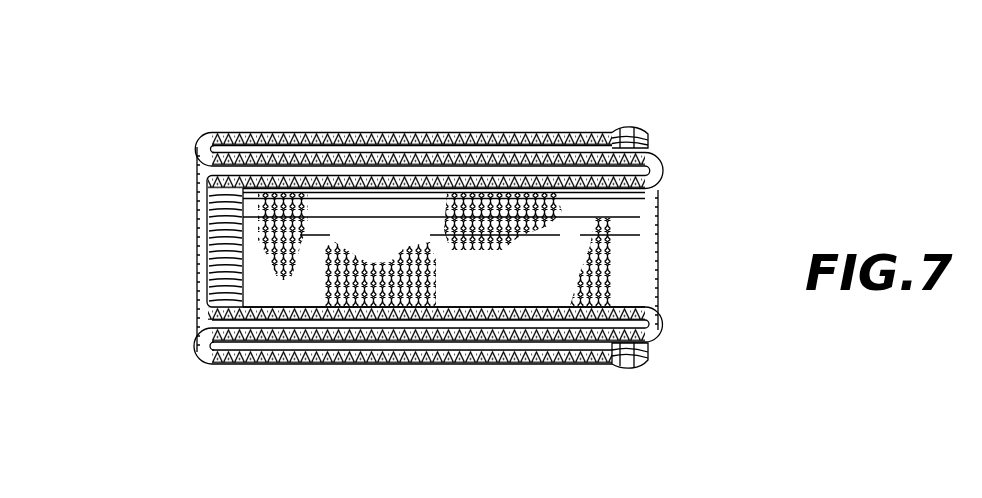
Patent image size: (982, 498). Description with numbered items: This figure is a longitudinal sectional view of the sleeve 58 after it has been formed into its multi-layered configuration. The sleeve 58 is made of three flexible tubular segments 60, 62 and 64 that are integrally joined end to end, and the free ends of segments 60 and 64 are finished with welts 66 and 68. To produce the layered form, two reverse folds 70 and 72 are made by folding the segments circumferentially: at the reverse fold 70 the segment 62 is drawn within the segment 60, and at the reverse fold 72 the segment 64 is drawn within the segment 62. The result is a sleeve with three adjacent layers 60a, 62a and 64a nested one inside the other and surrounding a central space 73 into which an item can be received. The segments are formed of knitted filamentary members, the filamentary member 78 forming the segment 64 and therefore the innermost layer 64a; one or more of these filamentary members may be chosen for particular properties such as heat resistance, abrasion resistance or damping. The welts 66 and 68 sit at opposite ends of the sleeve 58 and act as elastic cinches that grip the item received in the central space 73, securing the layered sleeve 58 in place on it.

The sleeve 58 is at (592, 112).
The tubular segment 60 is at (437, 140).
The layer 60a is at (275, 357).
The tubular segment 62 is at (370, 160).
The layer 62a is at (398, 342).
The tubular segment 64 is at (308, 183).
The layer 64a is at (520, 312).
The welt 66 is at (650, 346).
The welt 68 is at (217, 232).
The reverse fold 70 is at (208, 350).
The reverse fold 72 is at (662, 172).
The central space 73 is at (637, 254).
The filamentary member 78 is at (431, 274).